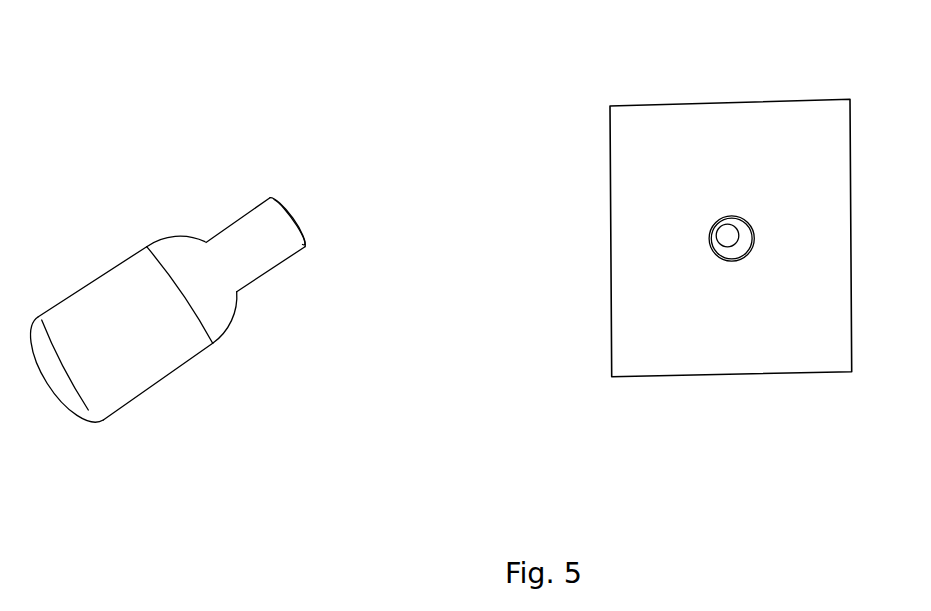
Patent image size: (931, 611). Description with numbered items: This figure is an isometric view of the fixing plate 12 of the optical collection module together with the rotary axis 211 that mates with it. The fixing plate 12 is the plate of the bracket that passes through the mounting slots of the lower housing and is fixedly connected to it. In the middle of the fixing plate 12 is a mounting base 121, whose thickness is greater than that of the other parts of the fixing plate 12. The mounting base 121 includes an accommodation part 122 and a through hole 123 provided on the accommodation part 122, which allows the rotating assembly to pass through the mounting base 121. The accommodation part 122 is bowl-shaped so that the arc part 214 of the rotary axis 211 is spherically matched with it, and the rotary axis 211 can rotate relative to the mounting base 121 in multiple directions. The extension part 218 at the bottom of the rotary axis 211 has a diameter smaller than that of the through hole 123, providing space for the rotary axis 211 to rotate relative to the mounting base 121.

The fixing plate 12 is at (755, 142).
The mounting base 121 is at (725, 259).
The accommodation part 122 is at (737, 238).
The through hole 123 is at (736, 247).
The rotary axis 211 is at (112, 367).
The arc part 214 is at (215, 301).
The extension part 218 is at (257, 235).